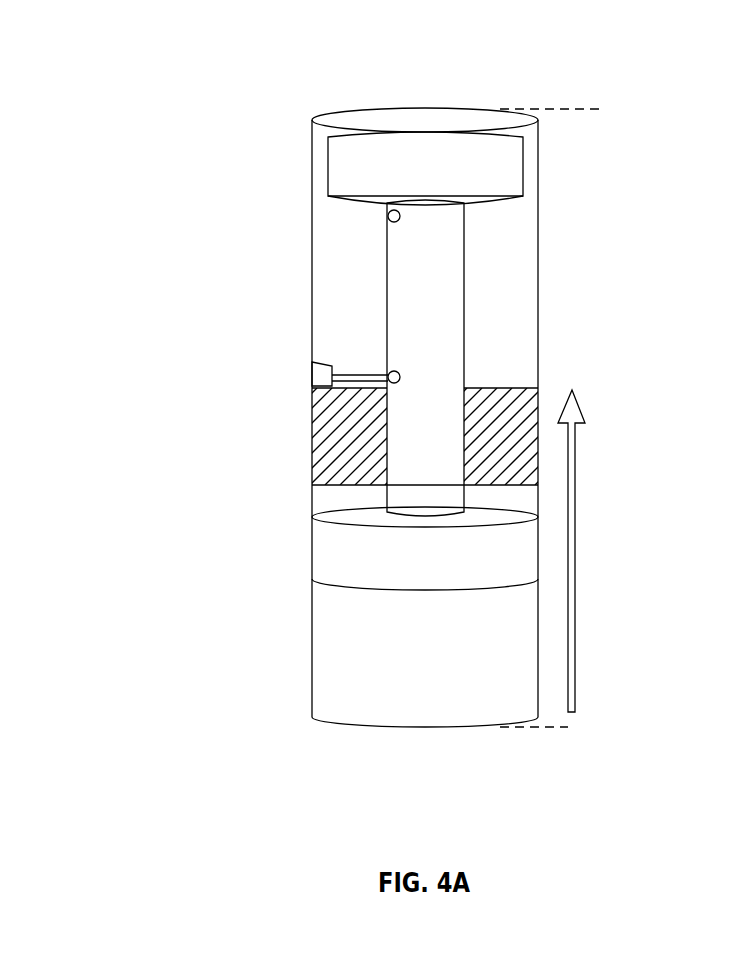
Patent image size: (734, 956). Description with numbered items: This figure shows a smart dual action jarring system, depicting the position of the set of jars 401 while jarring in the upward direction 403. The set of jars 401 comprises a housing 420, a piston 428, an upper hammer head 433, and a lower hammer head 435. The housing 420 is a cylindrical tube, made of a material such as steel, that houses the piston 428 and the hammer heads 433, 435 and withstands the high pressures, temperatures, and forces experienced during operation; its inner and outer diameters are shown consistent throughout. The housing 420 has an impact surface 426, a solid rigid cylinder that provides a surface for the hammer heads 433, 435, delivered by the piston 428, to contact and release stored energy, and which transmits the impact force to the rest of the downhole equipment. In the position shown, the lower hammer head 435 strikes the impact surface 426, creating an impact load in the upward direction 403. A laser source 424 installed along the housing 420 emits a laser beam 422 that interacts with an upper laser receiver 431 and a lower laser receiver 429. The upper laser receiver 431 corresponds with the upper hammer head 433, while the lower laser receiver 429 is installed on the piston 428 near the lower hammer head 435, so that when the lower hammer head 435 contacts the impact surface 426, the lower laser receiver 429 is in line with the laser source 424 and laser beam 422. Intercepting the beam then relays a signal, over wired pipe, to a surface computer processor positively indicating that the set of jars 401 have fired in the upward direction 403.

The set of jars 401 is at (603, 109).
The upward direction 403 is at (571, 712).
The housing 420 is at (312, 703).
The laser beam 422 is at (355, 374).
The laser source 424 is at (312, 377).
The impact surface 426 is at (350, 475).
The piston 428 is at (405, 292).
The lower laser receiver 429 is at (388, 382).
The upper laser receiver 431 is at (388, 216).
The upper hammer head 433 is at (368, 148).
The lower hammer head 435 is at (350, 573).